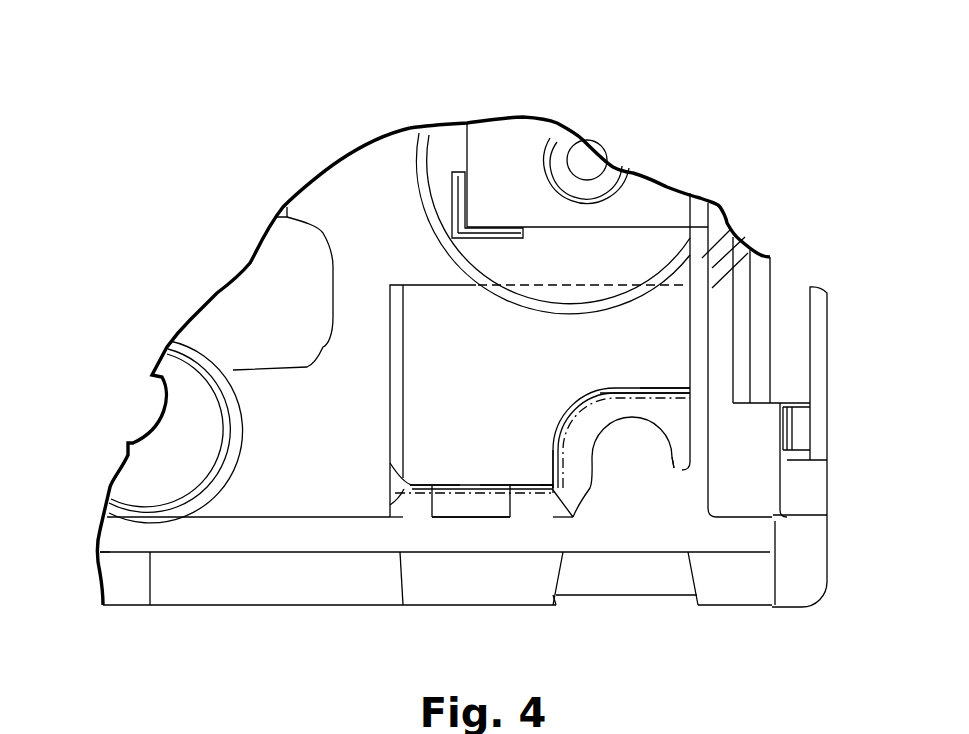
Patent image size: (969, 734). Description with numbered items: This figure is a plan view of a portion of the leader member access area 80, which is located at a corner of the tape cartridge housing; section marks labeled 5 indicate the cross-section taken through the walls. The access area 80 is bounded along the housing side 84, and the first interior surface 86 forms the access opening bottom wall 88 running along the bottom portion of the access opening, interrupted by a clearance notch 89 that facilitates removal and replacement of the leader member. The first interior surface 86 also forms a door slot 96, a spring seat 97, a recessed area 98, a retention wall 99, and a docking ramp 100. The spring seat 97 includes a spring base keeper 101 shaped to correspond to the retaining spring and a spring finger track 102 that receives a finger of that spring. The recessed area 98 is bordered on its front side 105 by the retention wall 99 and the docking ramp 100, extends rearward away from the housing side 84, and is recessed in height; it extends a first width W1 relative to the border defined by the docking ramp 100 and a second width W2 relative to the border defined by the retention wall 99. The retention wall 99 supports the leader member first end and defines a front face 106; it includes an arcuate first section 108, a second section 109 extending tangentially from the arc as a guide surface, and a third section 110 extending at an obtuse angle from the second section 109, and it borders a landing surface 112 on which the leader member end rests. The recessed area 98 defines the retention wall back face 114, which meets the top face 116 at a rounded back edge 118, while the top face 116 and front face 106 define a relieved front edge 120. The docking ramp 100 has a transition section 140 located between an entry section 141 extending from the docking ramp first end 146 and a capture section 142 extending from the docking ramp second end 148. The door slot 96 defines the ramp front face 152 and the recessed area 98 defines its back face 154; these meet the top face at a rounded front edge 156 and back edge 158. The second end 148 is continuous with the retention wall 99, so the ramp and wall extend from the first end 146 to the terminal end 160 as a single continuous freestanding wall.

The leader member access area 80 is at (725, 56).
The housing side 84 is at (317, 607).
The first interior surface 86 is at (339, 371).
The access opening bottom wall 88 is at (462, 616).
The clearance notch 89 is at (648, 580).
The door slot 96 is at (271, 556).
The spring seat 97 is at (705, 189).
The recessed area 98 is at (409, 290).
The retention wall 99 is at (611, 380).
The docking ramp 100 is at (476, 474).
The spring base keeper 101 is at (655, 207).
The spring finger track 102 is at (710, 283).
The front side 105 is at (408, 485).
The front face 106 is at (660, 447).
The first section 108 is at (672, 460).
The second section 109 is at (577, 433).
The third section 110 is at (583, 500).
The landing surface 112 is at (597, 496).
The back face 114 is at (658, 386).
The top face 116 is at (648, 440).
The back edge 118 is at (597, 384).
The front edge 120 is at (685, 470).
The transition section 140 is at (457, 503).
The entry section 141 is at (390, 517).
The capture section 142 is at (538, 505).
The docking ramp first end 146 is at (390, 502).
The docking ramp second end 148 is at (542, 477).
The front face 152 is at (402, 520).
The back face 154 is at (492, 483).
The front edge 156 is at (476, 512).
The back edge 158 is at (447, 483).
The terminal end 160 is at (688, 471).
The first width W1 is at (428, 292).
The second width W2 is at (633, 288).
The section line 5- 5 is at (157, 531).